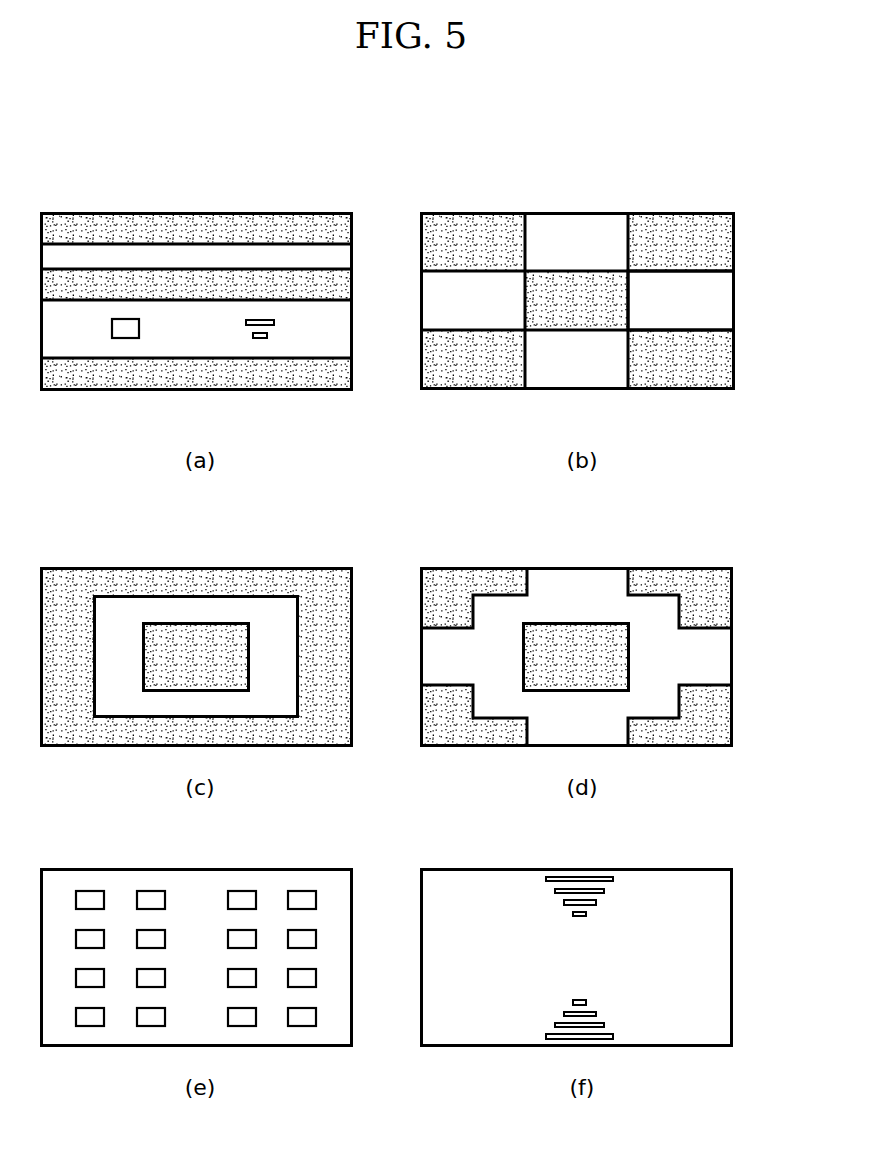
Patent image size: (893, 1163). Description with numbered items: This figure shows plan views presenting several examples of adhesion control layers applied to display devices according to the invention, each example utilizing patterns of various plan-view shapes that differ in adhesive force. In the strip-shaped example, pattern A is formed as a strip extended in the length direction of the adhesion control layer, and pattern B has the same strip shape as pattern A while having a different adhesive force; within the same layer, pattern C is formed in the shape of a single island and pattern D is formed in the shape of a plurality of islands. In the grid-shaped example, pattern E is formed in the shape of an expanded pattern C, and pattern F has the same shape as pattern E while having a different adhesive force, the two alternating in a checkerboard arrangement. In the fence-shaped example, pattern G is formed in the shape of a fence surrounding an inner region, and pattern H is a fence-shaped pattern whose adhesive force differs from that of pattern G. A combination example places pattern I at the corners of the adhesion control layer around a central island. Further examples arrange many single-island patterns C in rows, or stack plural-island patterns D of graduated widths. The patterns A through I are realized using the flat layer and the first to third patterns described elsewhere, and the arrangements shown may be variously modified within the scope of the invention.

The pattern A is at (74, 222).
The pattern B is at (145, 255).
The pattern C is at (125, 333).
The pattern D is at (260, 342).
The pattern E is at (723, 238).
The pattern F is at (722, 300).
The pattern G is at (72, 582).
The pattern H is at (275, 622).
The pattern I is at (700, 583).